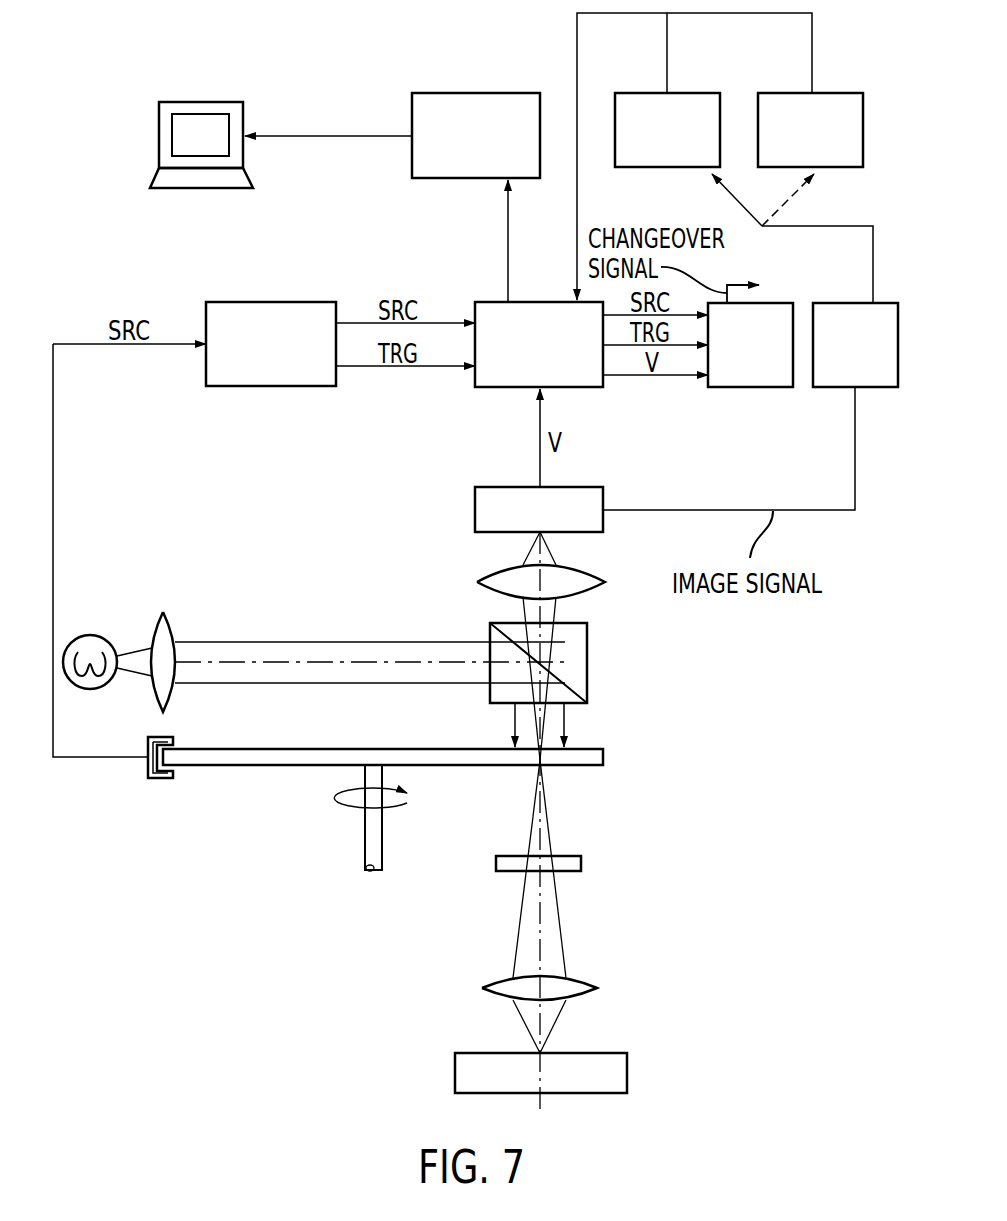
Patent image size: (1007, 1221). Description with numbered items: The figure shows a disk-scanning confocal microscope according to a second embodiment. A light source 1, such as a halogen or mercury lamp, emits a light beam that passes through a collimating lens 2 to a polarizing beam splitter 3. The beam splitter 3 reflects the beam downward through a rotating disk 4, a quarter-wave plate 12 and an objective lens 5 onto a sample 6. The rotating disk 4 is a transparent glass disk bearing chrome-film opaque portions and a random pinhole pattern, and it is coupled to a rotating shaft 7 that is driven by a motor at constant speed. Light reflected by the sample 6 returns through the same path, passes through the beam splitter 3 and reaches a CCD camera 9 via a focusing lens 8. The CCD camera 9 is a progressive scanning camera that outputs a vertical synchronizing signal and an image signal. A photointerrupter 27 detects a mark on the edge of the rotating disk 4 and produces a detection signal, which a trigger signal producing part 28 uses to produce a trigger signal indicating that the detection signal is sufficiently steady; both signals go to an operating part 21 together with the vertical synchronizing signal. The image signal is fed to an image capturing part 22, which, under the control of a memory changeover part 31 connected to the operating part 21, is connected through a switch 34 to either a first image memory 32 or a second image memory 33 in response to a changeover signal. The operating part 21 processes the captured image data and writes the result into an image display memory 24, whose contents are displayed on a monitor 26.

The light source 1 is at (95, 635).
The collimating lens 2 is at (163, 612).
The PBS (polarizing beam splitter) 3 is at (587, 680).
The rotating disk 4 is at (603, 757).
The objective lens 5 is at (597, 988).
The sample 6 is at (455, 1070).
The rotating shaft 7 is at (365, 835).
The focusing lens 8 is at (477, 582).
The CCD camera 9 is at (475, 507).
The quarter-wave plate 12 is at (581, 860).
The operating part 21 is at (475, 302).
The image capturing part 22 is at (830, 390).
The image display memory 24 is at (481, 93).
The monitor 26 is at (159, 131).
The photointerrupter 27 is at (155, 780).
The trigger signal producing part 28 is at (206, 314).
The memory changeover part 31 is at (750, 390).
The first image memory 32 is at (690, 93).
The second image memory 33 is at (848, 93).
The switch 34 is at (712, 192).